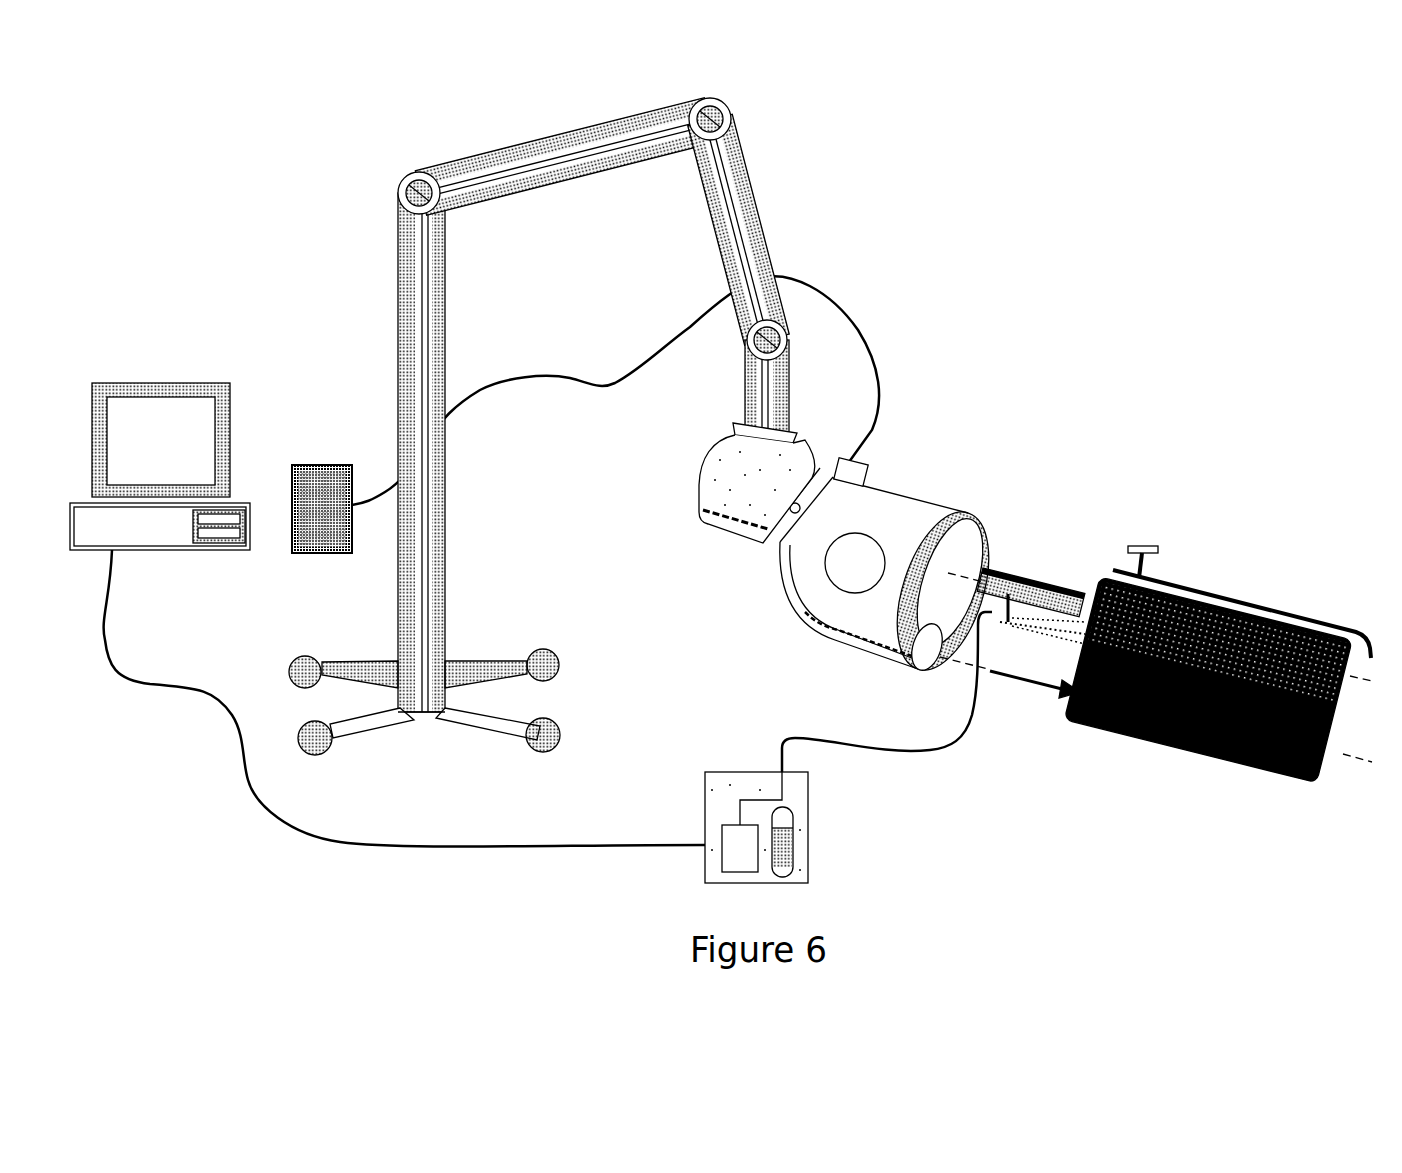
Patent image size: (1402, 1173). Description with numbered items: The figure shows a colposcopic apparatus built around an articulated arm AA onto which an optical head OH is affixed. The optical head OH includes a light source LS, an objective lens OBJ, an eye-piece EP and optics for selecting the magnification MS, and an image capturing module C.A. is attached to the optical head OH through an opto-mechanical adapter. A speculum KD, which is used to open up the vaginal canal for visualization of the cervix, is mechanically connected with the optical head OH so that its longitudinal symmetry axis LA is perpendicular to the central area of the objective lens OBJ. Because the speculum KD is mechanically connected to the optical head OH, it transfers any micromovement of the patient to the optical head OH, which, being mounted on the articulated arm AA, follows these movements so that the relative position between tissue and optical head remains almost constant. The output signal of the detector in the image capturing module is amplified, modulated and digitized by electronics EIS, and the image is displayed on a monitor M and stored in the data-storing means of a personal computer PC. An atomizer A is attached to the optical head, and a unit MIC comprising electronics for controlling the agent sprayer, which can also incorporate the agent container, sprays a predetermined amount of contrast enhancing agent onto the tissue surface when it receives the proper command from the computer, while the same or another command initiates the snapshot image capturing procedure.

The articulated arm AA is at (546, 180).
The monitor M is at (96, 388).
The personal computer PC is at (86, 512).
The electronics EIS is at (305, 473).
The eye-piece EP is at (732, 428).
The image capturing module C.A. is at (868, 470).
The objective lens OBJ is at (899, 574).
The optical head OH is at (790, 560).
The optics for selecting the magnification MS is at (859, 584).
The light source LS is at (932, 655).
The atomizer A is at (1015, 616).
The speculum KD is at (1238, 606).
The longitudinal symmetry axis LA is at (1355, 763).
The unit MIC is at (810, 856).